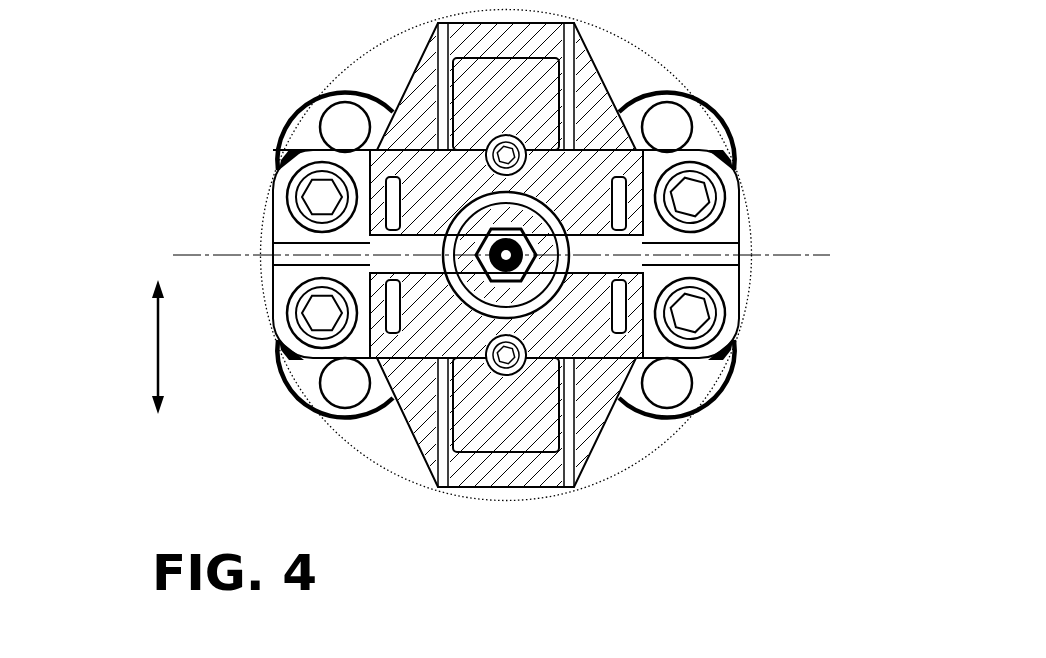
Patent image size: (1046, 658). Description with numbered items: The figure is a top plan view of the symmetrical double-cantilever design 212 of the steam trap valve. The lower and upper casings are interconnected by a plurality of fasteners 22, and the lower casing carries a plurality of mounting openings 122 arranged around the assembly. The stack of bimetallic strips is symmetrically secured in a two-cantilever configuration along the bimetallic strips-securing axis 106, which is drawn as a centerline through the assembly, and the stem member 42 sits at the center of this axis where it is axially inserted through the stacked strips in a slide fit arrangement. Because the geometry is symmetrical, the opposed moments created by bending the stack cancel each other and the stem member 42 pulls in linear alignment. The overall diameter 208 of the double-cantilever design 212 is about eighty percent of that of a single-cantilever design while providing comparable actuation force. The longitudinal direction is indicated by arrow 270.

The fasteners 22 is at (305, 197).
The stem member 42 is at (515, 282).
The bimetallic strips-securing axis 106 is at (790, 257).
The mounting openings 122 is at (342, 124).
The overall diameter 208 is at (637, 465).
The symmetrical double-cantilever design 212 is at (812, 122).
The arrow indicating longitudinal direction 270 is at (158, 345).